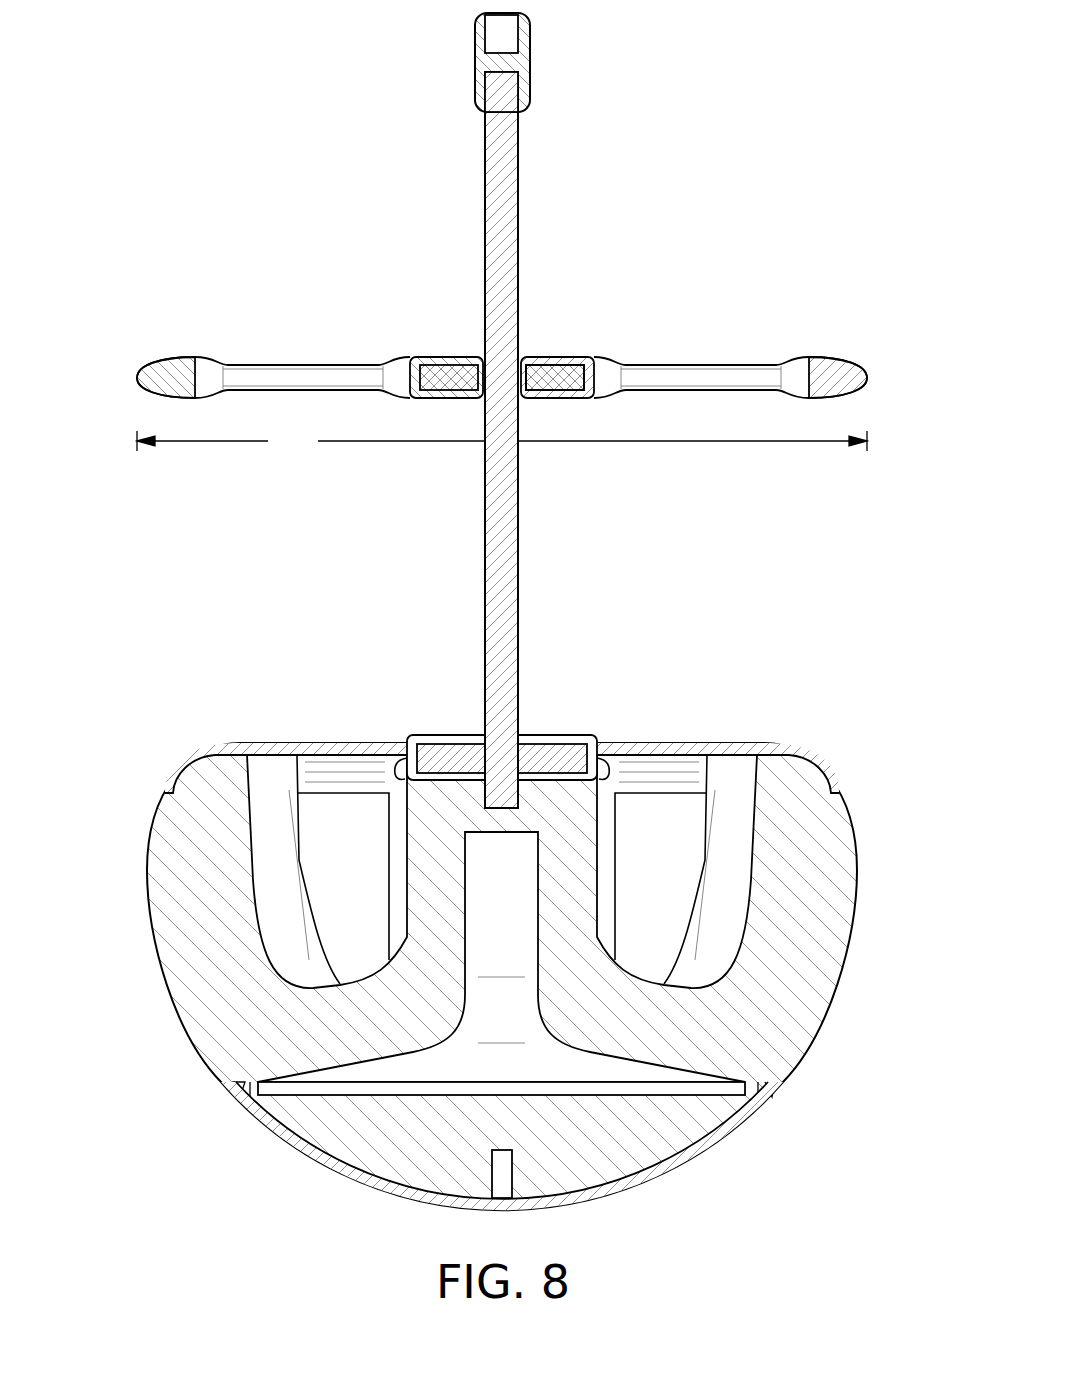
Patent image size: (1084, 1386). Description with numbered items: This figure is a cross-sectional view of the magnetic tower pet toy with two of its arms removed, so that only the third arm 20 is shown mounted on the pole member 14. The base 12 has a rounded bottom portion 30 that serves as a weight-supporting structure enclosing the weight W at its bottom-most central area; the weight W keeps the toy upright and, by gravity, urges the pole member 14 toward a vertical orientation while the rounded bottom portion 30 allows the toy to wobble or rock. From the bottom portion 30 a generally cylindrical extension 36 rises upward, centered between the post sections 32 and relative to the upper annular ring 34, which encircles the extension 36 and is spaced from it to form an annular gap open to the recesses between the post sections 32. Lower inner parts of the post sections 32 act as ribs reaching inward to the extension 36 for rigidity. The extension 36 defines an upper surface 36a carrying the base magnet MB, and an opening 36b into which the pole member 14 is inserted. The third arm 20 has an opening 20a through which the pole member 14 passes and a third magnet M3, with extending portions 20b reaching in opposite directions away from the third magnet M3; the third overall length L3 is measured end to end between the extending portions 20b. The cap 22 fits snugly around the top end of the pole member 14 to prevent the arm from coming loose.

The base 12 is at (840, 980).
The pole member 14 is at (524, 228).
The third arm 20 is at (506, 332).
The opening 20a is at (490, 378).
The extending portions 20b is at (265, 358).
The cap 22 is at (522, 60).
The bottom portion 30 is at (345, 1170).
The post sections 32 is at (270, 833).
The upper annular ring 34 is at (812, 748).
The extension 36 is at (615, 850).
The upper surface 36a is at (570, 775).
The opening 36b is at (514, 790).
The base magnet MB is at (458, 752).
The third magnet M3 is at (560, 375).
The third overall length L3 is at (502, 443).
The weight W is at (628, 1140).